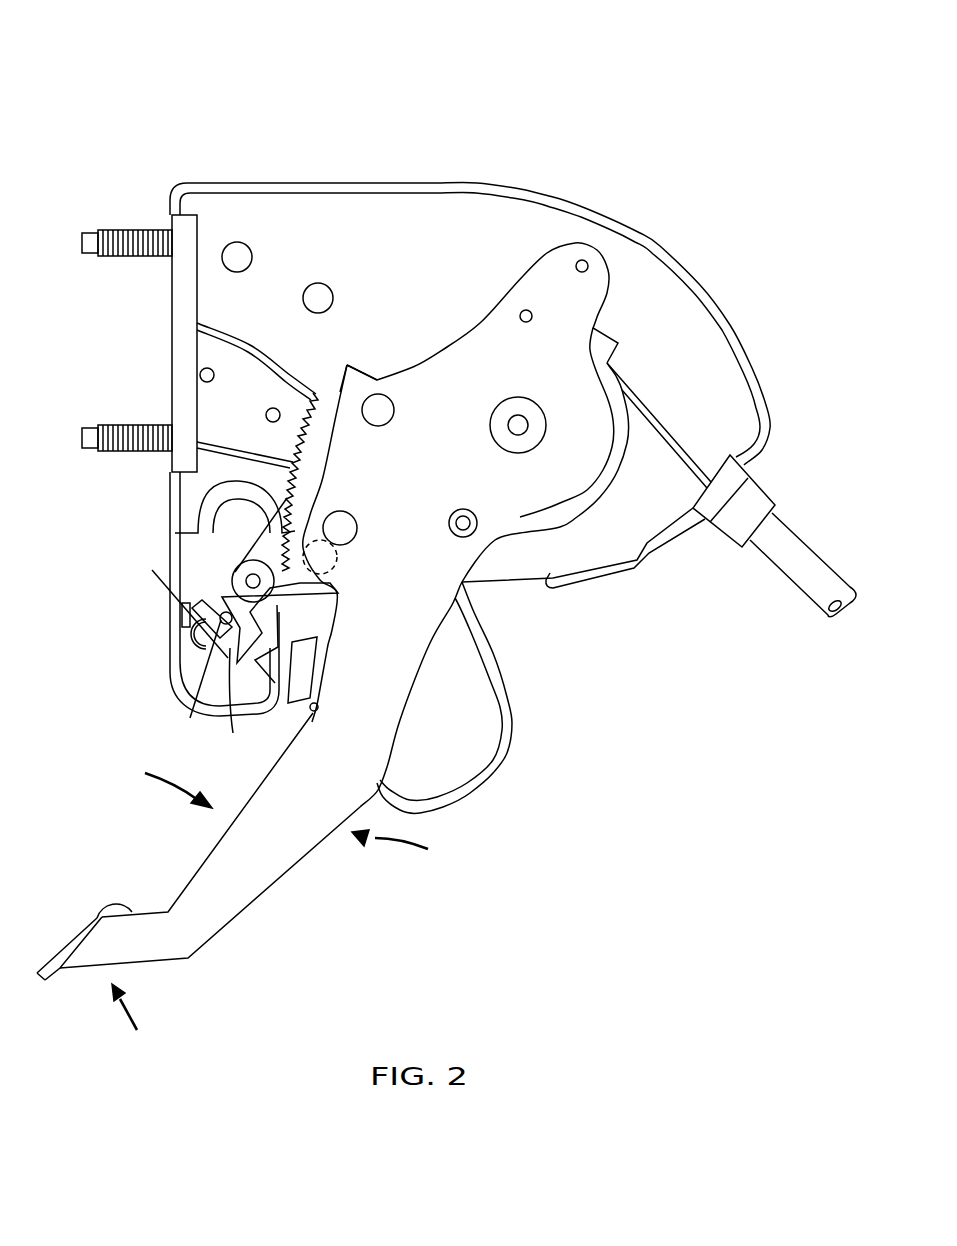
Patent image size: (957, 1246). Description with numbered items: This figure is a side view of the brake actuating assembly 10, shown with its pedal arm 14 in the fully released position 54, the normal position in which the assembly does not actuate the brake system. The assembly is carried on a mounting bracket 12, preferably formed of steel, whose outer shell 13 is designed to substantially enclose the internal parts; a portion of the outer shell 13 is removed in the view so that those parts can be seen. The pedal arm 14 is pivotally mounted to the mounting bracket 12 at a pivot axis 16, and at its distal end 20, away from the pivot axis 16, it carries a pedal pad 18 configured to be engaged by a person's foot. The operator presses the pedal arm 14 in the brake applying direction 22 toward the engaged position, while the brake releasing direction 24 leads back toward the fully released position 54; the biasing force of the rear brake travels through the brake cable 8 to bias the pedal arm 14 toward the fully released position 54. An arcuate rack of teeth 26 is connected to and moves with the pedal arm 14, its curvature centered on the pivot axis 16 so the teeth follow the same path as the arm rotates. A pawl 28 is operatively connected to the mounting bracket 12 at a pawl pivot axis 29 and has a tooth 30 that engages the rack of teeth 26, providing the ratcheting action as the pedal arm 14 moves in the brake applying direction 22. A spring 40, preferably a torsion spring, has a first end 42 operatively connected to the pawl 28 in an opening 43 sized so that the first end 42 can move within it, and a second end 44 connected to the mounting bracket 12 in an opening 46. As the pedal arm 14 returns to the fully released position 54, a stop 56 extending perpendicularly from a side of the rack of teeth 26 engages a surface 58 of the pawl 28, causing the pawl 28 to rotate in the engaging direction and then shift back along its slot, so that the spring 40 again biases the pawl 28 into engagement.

The brake cable 8 is at (652, 413).
The brake actuating assembly 10 is at (180, 64).
The mounting bracket 12 is at (612, 228).
The outer shell 13 is at (452, 256).
The pedal arm 14 is at (268, 878).
The pivot axis 16 is at (460, 515).
The pedal pad 18 is at (62, 950).
The distal end 20 is at (135, 1023).
The brake applying direction 22 is at (162, 790).
The brake releasing direction 24 is at (403, 848).
The arcuate rack of teeth 26 is at (352, 373).
The pawl 28 is at (228, 706).
The pawl pivot axis 29 is at (249, 575).
The tooth 30 is at (300, 588).
The spring 40 is at (203, 663).
The first end 42 is at (216, 606).
The opening 43 is at (193, 685).
The second end 44 is at (182, 607).
The opening 46 is at (182, 602).
The fully released position 54 is at (567, 679).
The stop 56 is at (337, 572).
The surface 58 is at (344, 547).